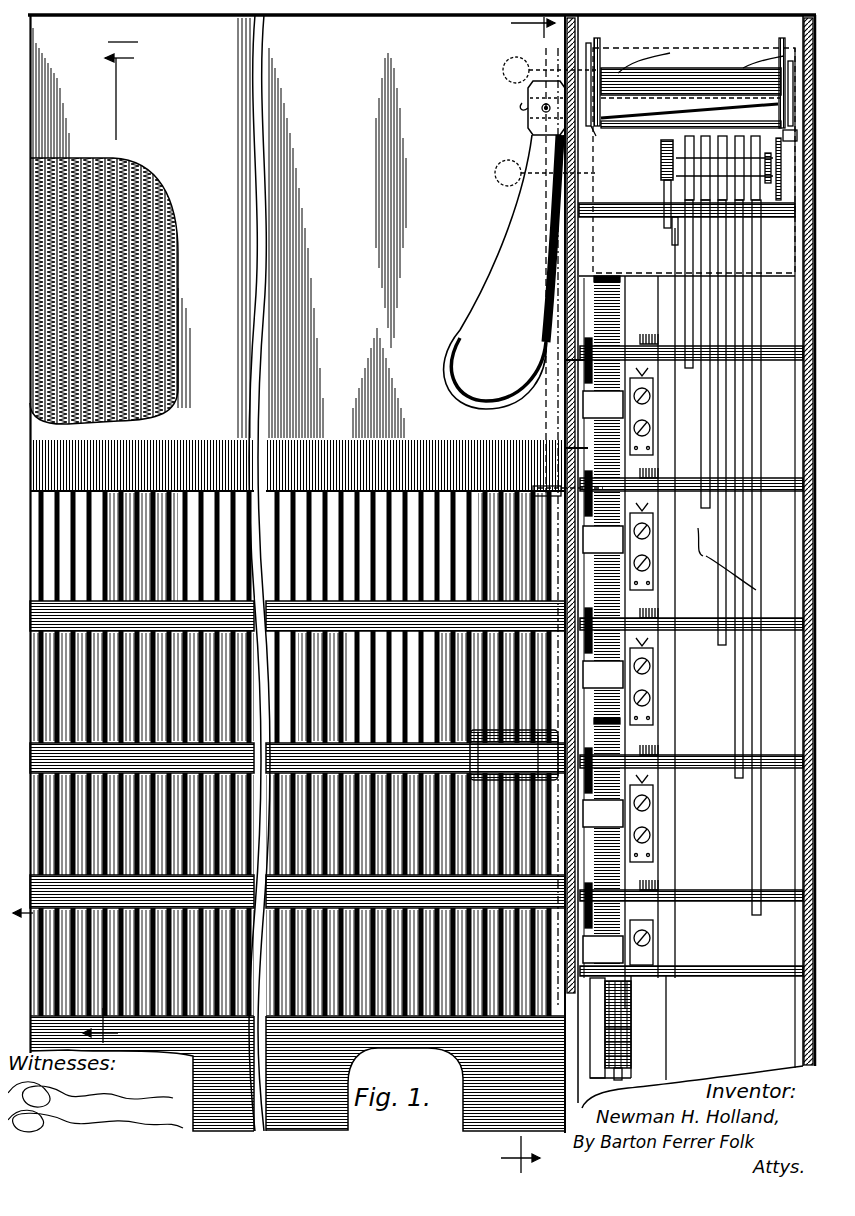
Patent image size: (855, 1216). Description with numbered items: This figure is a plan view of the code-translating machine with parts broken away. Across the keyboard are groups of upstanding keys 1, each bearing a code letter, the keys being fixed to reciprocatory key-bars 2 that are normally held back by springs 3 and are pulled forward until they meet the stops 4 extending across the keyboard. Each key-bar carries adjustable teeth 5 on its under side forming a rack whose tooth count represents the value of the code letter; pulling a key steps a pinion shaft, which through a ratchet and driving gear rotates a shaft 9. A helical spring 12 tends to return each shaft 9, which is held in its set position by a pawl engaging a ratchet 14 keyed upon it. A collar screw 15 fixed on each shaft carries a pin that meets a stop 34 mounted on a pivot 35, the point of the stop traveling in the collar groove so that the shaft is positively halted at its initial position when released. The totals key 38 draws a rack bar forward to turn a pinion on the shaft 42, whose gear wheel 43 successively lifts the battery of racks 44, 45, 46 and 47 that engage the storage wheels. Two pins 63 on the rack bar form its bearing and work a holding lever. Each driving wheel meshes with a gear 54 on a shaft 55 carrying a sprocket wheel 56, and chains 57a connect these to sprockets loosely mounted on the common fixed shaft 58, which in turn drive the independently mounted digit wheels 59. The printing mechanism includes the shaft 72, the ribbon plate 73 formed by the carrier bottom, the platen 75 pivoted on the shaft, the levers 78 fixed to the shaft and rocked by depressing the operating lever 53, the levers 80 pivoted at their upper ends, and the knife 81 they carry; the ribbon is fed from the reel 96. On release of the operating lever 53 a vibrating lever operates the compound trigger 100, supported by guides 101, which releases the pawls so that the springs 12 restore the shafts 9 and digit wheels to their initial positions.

The keys 1 is at (416, 483).
The key-bars 2 is at (298, 727).
The springs 3 is at (165, 245).
The stops 4 is at (502, 708).
The teeth 5 is at (533, 31).
The shaft 9 is at (520, 1160).
The helical spring 12 is at (21, 906).
The ratchet 14 is at (110, 538).
The collar screw 15 is at (642, 878).
The stop 34 is at (645, 915).
The pivot 35 is at (297, 1058).
The totals key 38 is at (566, 480).
The shaft 42 is at (714, 958).
The gear wheel 43 is at (658, 1010).
The rack 44 is at (618, 1062).
The rack 45 is at (623, 1048).
The rack 46 is at (623, 1034).
The rack 47 is at (623, 1020).
The operating lever 53 is at (504, 272).
The gear 54 is at (558, 440).
The shafts 55 is at (703, 882).
The sprocket wheel 56 is at (748, 908).
The chains 57a is at (720, 559).
The common fixed shaft 58 is at (630, 195).
The digit wheels 59 is at (653, 142).
The pins 63 is at (546, 121).
The shaft 72 is at (529, 108).
The ribbon plate 73 is at (594, 120).
The platen 75 is at (738, 102).
The levers 78 is at (701, 59).
The levers 80 is at (778, 37).
The knife 81 is at (691, 83).
The reel 96 is at (667, 210).
The compound trigger 100 is at (618, 975).
The guides 101 is at (629, 618).